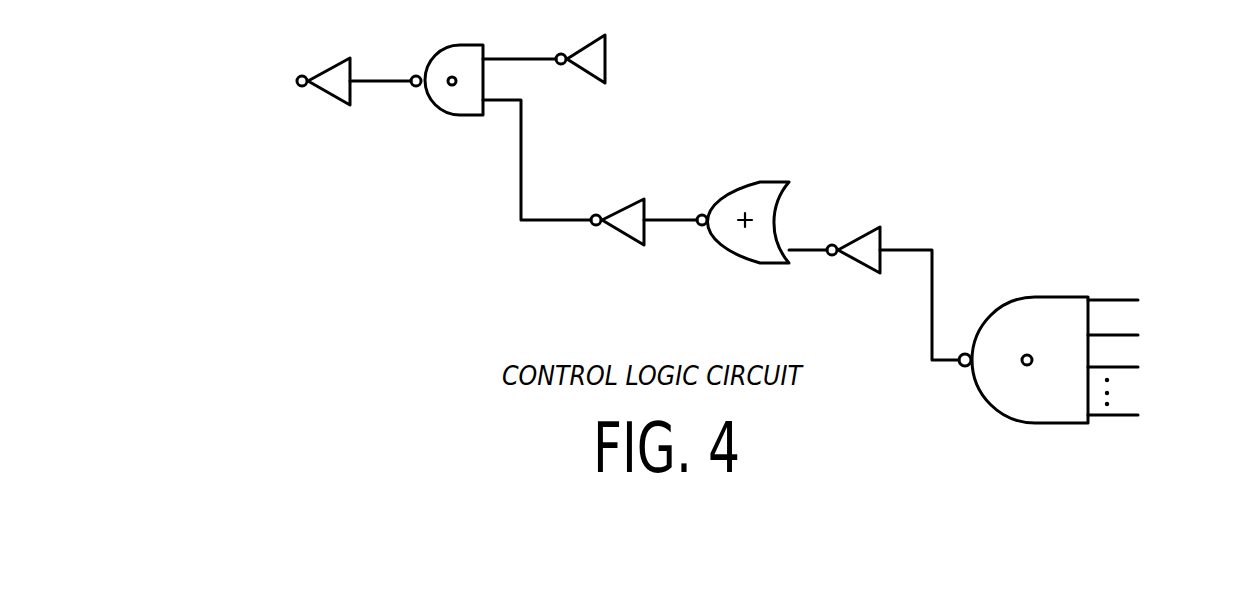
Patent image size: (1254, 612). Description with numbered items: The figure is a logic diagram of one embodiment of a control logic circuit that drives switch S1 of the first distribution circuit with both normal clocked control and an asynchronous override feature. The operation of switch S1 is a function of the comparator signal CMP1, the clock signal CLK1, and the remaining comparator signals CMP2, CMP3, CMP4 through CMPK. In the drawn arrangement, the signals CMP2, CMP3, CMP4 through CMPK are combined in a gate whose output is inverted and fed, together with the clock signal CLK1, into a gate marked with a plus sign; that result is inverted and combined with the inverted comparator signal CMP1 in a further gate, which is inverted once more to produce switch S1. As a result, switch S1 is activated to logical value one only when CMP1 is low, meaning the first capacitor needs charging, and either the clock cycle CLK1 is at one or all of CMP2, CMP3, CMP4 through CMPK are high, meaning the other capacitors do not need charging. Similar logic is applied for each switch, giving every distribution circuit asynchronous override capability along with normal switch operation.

The switch S1 is at (297, 81).
The comparator output signal CMP1 is at (605, 59).
The clock signal CLK1 is at (789, 189).
The comparator output signal CMP2 is at (1146, 302).
The comparator output signal CMP3 is at (1146, 337).
The comparator output signal CMP4 is at (1146, 369).
The comparator output signal CMPK is at (1147, 417).